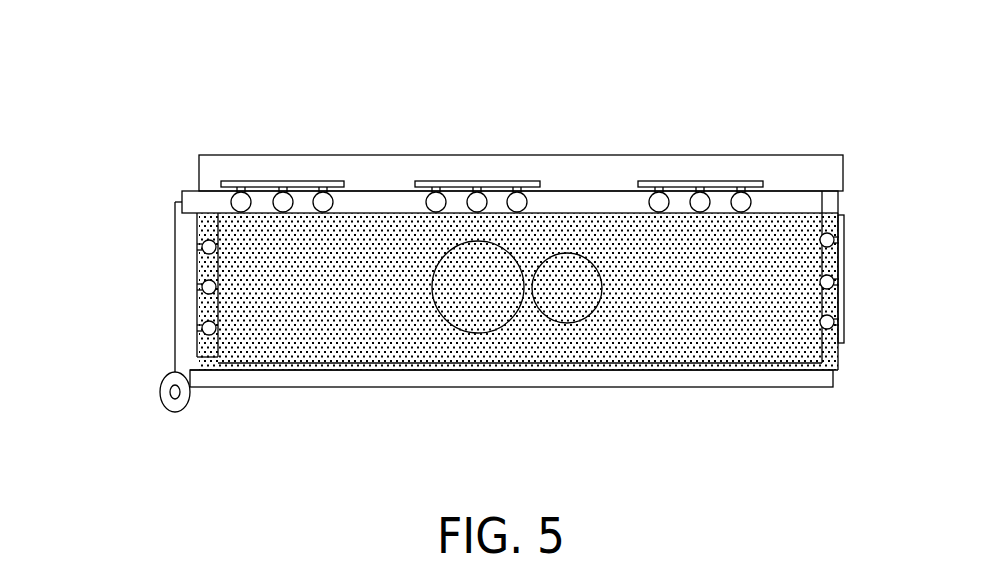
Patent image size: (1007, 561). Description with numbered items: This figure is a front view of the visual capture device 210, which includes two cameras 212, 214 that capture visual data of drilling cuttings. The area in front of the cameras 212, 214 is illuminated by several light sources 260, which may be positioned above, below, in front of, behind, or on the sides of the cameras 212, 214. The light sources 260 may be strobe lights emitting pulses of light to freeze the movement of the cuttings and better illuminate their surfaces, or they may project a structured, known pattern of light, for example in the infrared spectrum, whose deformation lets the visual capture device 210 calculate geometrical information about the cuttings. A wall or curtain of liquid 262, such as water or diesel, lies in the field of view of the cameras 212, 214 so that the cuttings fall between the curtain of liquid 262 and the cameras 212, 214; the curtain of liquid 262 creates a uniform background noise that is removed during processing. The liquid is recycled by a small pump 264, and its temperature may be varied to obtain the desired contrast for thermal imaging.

The visual capture device 210 is at (264, 90).
The camera 212 is at (558, 323).
The camera 214 is at (500, 331).
The light source 260 is at (284, 202).
The curtain of liquid 262 is at (514, 291).
The pump 264 is at (160, 403).